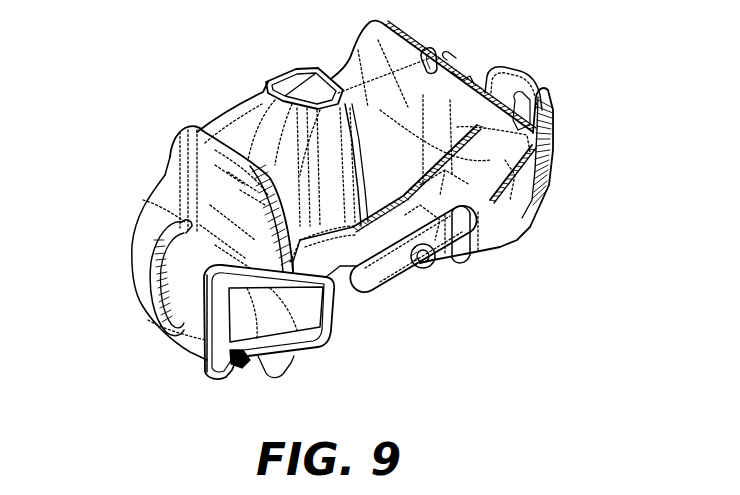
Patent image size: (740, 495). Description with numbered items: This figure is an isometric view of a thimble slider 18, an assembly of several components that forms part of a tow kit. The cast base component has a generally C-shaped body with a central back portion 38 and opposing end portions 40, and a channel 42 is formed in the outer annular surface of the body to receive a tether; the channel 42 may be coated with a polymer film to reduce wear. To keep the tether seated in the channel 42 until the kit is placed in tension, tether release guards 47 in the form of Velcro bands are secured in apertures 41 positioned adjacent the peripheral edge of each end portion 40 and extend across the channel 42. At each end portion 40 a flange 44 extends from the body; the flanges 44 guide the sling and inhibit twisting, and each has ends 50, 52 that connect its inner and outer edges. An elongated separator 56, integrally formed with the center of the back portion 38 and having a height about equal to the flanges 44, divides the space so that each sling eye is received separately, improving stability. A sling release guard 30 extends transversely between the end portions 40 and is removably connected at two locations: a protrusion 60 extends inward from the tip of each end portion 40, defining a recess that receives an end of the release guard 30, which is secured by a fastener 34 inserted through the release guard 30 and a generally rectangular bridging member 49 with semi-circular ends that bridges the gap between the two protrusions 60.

The thimble slider 18 is at (164, 78).
The sling release guard 30 is at (400, 228).
The fastener 34 is at (433, 266).
The back portion 38 is at (245, 105).
The end portion 40 is at (222, 230).
The aperture 41 is at (481, 75).
The channel 42 is at (270, 312).
The flange 44 is at (210, 198).
The tether release guard 47 is at (517, 90).
The bridging member 49 is at (447, 238).
The end of flange 50 is at (173, 157).
The end of flange 52 is at (533, 133).
The separator 56 is at (349, 176).
The protrusion 60 is at (480, 208).